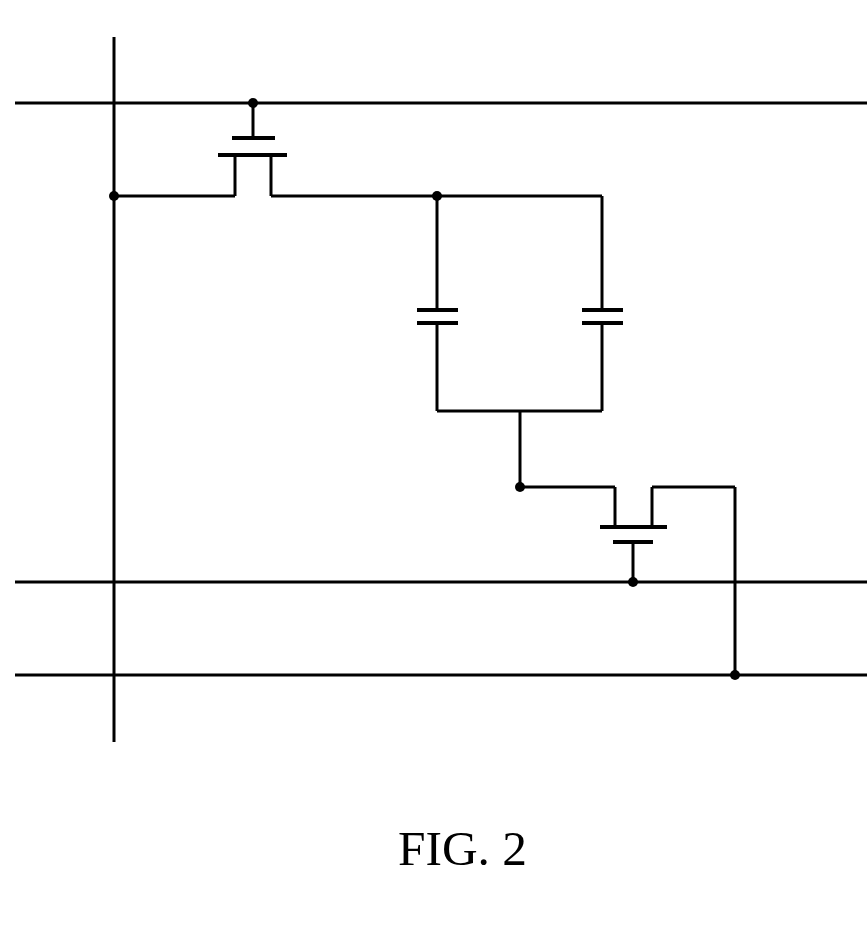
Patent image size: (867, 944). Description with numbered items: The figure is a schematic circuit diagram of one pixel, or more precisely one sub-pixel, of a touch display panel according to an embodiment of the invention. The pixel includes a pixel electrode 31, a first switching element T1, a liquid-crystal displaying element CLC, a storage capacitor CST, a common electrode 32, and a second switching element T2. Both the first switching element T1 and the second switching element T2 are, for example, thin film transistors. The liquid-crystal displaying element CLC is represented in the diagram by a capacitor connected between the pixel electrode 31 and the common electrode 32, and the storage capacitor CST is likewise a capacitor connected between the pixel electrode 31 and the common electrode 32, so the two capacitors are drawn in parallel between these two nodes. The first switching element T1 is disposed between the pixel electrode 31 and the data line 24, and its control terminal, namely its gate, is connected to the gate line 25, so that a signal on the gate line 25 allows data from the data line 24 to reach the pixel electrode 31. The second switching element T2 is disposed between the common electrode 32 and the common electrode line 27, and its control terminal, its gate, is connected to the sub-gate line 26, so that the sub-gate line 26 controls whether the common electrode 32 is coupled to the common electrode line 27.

The data line 24 is at (114, 57).
The gate line 25 is at (725, 103).
The sub-gate line 26 is at (787, 582).
The common electrode line 27 is at (787, 675).
The pixel electrode 31 is at (437, 196).
The common electrode 32 is at (520, 487).
The first switching element T1 is at (290, 145).
The second switching element T2 is at (595, 531).
The liquid-crystal displaying element CLC is at (410, 313).
The storage capacitor CST is at (630, 316).